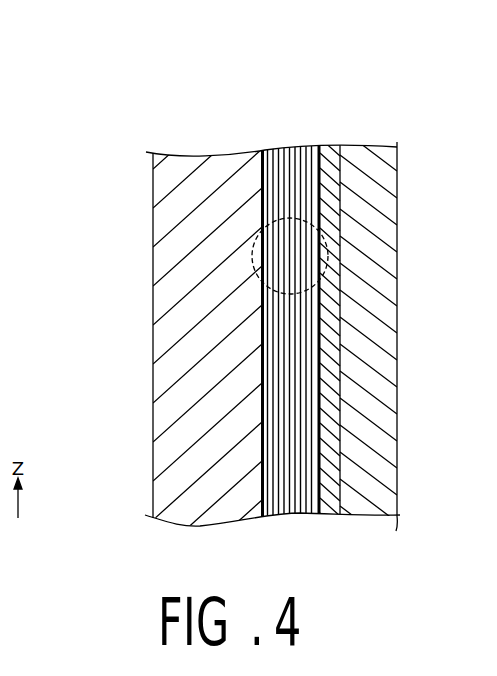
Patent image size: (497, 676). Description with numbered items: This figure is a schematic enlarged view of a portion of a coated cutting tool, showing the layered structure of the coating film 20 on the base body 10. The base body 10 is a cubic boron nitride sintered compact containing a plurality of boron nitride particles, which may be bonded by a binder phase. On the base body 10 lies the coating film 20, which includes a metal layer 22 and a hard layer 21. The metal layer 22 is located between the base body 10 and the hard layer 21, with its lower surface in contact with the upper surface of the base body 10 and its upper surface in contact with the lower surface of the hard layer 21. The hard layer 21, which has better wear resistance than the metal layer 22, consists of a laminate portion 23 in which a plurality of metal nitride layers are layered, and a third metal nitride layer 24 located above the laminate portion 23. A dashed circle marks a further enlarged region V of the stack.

The base body 10 is at (370, 340).
The coating film 20 is at (153, 42).
The hard layer 21 is at (318, 92).
The metal layer 22 is at (334, 148).
The laminate portion 23 is at (293, 158).
The third metal nitride layer 24 is at (195, 155).
The detail region V is at (253, 258).